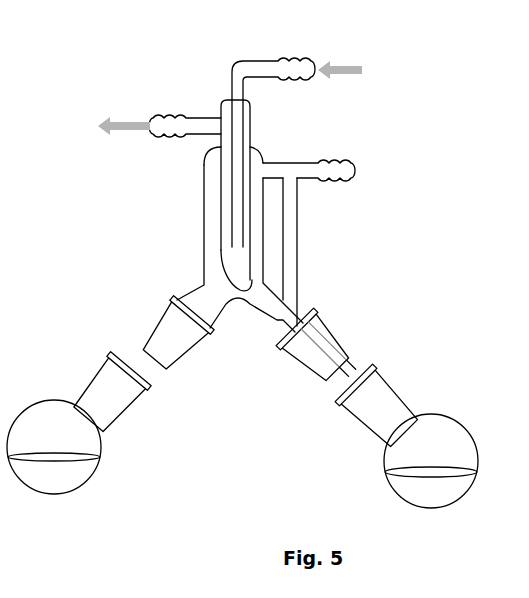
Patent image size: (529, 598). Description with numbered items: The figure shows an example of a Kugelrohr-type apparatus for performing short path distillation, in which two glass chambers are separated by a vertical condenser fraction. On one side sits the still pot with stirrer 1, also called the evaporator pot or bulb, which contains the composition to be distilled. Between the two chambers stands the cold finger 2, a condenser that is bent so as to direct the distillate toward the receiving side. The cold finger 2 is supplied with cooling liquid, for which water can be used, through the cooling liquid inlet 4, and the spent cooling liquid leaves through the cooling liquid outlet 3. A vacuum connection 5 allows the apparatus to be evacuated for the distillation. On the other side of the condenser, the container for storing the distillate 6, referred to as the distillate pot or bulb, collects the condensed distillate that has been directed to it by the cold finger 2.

The still pot with stirrer 1 is at (79, 423).
The cold finger 2 is at (249, 240).
The cooling liquid outlet 3 is at (145, 129).
The cooling liquid inlet 4 is at (311, 151).
The vacuum connection 5 is at (324, 177).
The container for storing the distillate 6 is at (406, 436).